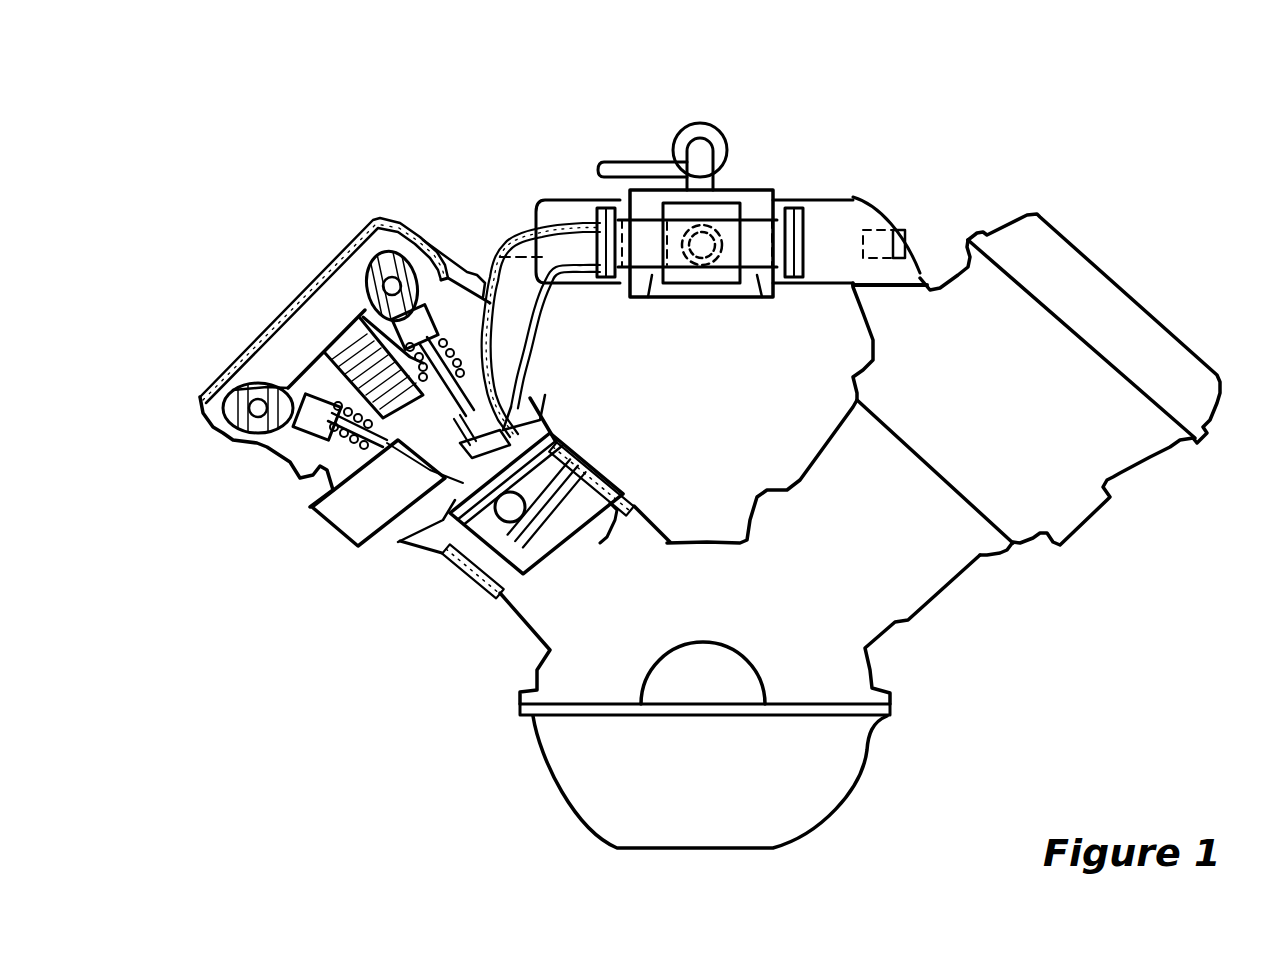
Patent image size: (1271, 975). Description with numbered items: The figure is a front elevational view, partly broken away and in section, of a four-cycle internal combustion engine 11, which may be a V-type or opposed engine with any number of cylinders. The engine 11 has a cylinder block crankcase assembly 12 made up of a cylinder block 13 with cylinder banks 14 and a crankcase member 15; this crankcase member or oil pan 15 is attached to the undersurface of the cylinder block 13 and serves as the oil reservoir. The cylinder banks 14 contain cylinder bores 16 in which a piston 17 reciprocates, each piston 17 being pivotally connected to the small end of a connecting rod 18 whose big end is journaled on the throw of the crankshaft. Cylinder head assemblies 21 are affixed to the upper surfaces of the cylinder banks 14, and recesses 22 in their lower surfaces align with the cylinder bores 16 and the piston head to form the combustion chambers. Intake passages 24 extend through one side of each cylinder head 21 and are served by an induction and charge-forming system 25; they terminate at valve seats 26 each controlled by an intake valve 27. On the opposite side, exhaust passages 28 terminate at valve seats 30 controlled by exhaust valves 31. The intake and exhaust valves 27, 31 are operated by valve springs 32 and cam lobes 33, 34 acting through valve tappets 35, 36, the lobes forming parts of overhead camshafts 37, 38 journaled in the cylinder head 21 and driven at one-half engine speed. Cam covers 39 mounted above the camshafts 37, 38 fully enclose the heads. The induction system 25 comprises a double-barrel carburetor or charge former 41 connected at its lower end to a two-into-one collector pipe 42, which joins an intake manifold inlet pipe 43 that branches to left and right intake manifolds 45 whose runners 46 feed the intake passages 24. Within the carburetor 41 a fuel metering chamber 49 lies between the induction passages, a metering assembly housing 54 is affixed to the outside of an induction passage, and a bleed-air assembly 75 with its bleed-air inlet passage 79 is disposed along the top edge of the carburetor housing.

The internal combustion engine 11 is at (937, 108).
The cylinder block crankcase assembly 12 is at (873, 671).
The cylinder block 13 is at (705, 542).
The cylinder banks 14 is at (615, 472).
The crankcase member 15 is at (870, 765).
The cylinder bores 16 is at (530, 600).
The piston 17 is at (497, 593).
The connecting rod 18 is at (607, 547).
The cylinder head assemblies 21 is at (550, 352).
The recesses 22 is at (475, 568).
The intake passages 24 is at (538, 302).
The induction and charge-forming system 25 is at (673, 97).
The valve seats 26 is at (493, 431).
The intake valve 27 is at (533, 393).
The exhaust passages 28 is at (347, 537).
The valve seats 30 is at (428, 490).
The exhaust valves 31 is at (392, 530).
The valve springs 32 is at (360, 337).
The cam lobe 33 is at (418, 225).
The cam lobe 34 is at (233, 390).
The valve tappet 35 is at (456, 272).
The valve tappet 36 is at (306, 393).
The overhead camshaft 37 is at (365, 290).
The overhead camshaft 38 is at (267, 387).
The cam covers 39 is at (1012, 222).
The charge former 41 is at (787, 110).
The collector pipe 42 is at (730, 210).
The intake manifold inlet pipe 43 is at (650, 277).
The intake manifolds 45 is at (780, 205).
The runners 46 is at (860, 218).
The fuel metering chamber 49 is at (565, 203).
The housing 54 is at (543, 200).
The bleed-air assembly 75 is at (722, 125).
The bleed-air inlet passage 79 is at (623, 158).